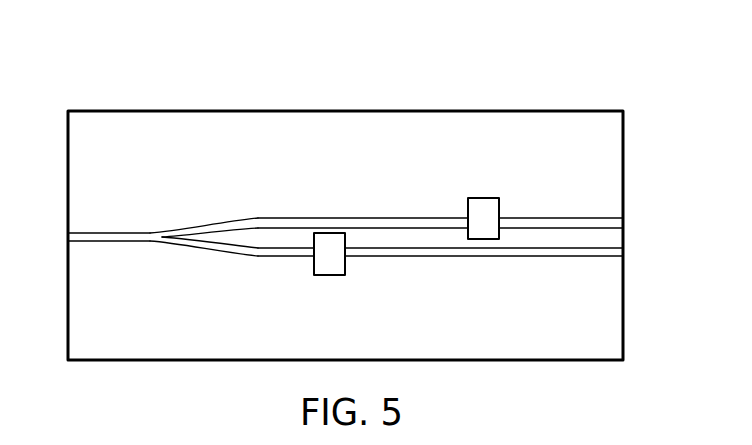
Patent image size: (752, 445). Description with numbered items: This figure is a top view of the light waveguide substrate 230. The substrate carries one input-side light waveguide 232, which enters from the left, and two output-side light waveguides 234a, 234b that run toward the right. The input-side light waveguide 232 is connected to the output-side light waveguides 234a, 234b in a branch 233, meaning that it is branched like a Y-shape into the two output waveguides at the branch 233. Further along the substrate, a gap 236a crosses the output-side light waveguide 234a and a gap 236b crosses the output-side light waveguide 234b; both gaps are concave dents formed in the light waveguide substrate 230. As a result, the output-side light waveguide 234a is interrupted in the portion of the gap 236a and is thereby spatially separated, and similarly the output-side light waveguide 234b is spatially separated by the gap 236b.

The light waveguide substrate 230 is at (374, 118).
The input-side light waveguide 232 is at (115, 243).
The branch 233 is at (146, 228).
The output-side light waveguide 234a is at (404, 258).
The output-side light waveguide 234b is at (293, 215).
The gap 236a is at (330, 262).
The gap 236b is at (482, 212).